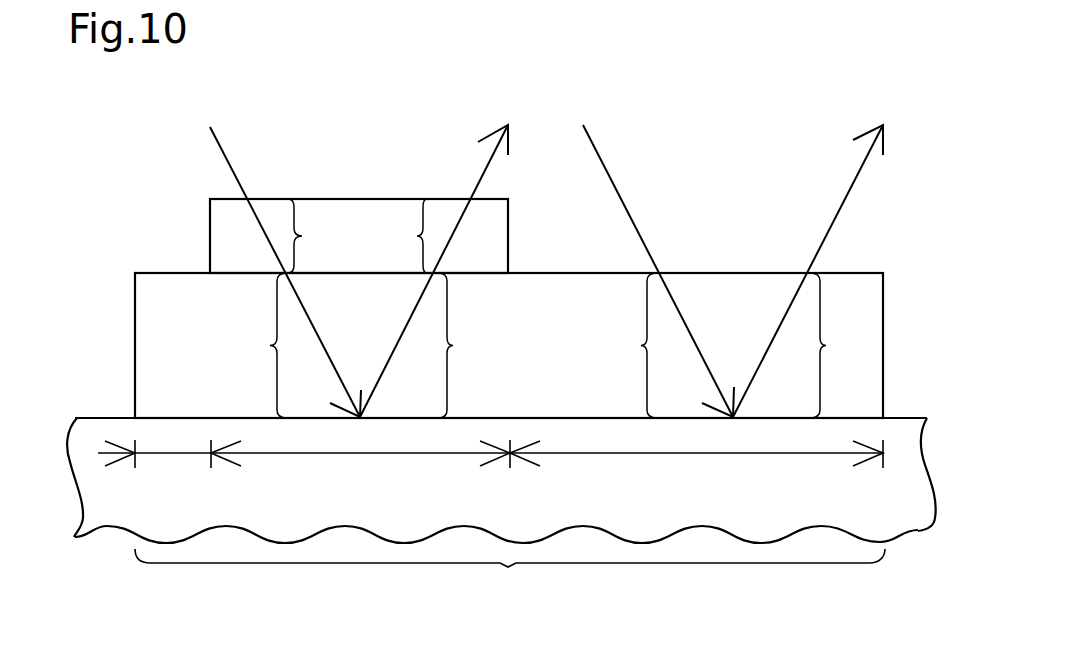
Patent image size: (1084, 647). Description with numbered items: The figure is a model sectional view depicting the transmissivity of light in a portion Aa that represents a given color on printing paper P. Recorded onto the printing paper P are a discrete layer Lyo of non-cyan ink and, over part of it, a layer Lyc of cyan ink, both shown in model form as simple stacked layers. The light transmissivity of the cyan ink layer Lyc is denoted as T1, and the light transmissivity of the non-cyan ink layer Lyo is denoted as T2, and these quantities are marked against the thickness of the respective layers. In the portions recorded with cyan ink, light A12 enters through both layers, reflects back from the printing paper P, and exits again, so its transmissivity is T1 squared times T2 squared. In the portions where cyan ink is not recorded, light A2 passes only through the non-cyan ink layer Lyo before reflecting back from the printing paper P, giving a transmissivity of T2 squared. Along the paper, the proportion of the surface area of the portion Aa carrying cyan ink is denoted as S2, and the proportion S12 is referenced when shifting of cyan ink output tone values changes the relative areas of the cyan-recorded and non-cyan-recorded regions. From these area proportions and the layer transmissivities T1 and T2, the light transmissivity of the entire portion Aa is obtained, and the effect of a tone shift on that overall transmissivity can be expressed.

The light reflected back from portions recorded with cyan ink A12 is at (225, 152).
The light reflected back from portions where cyan ink is not recorded A2 is at (602, 152).
The layer of cyan ink Lyc is at (362, 199).
The layer of non-cyan ink Lyo is at (733, 273).
The printing paper P is at (100, 418).
The light transmissivity of the cyan ink layer T1 is at (357, 236).
The light transmissivity of the non-cyan ink layer T2 is at (547, 345).
The proportion of surface area having cyan ink recorded thereon S2 is at (490, 449).
The proportion of surface area of the portion having cyan ink recorded thereon after S12 is at (360, 449).
The portion representing a given color Aa is at (510, 577).